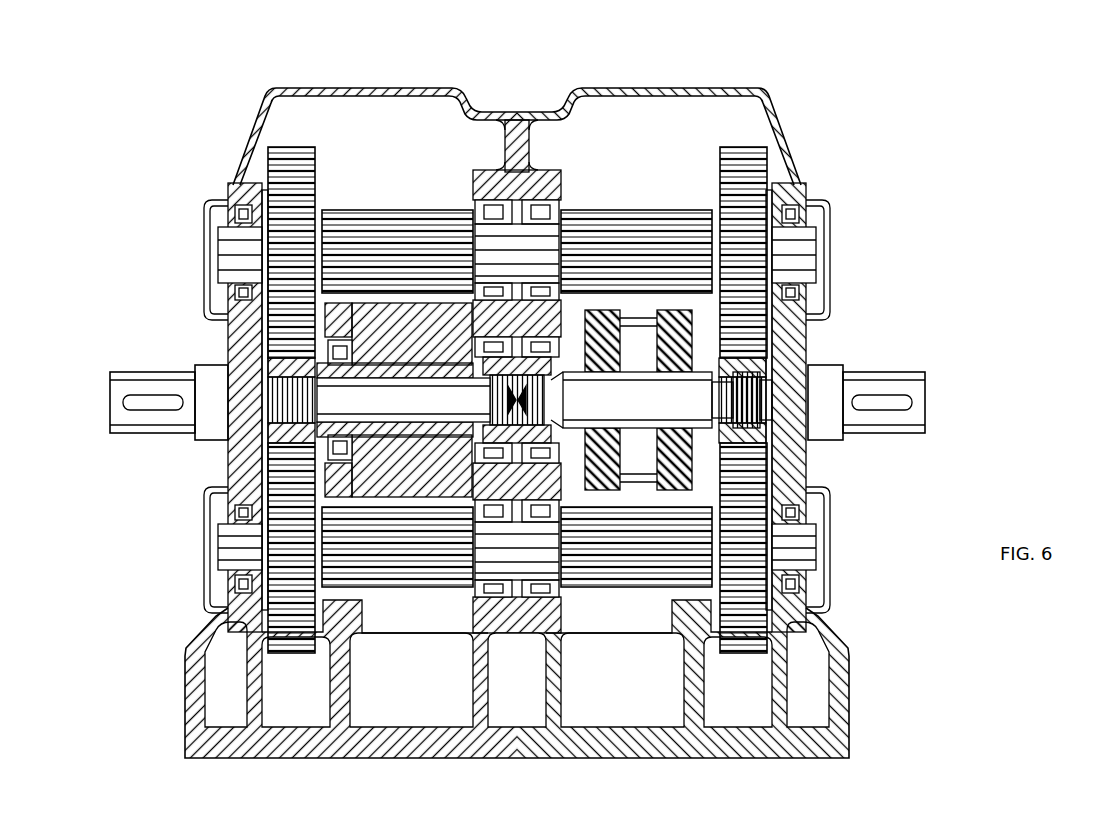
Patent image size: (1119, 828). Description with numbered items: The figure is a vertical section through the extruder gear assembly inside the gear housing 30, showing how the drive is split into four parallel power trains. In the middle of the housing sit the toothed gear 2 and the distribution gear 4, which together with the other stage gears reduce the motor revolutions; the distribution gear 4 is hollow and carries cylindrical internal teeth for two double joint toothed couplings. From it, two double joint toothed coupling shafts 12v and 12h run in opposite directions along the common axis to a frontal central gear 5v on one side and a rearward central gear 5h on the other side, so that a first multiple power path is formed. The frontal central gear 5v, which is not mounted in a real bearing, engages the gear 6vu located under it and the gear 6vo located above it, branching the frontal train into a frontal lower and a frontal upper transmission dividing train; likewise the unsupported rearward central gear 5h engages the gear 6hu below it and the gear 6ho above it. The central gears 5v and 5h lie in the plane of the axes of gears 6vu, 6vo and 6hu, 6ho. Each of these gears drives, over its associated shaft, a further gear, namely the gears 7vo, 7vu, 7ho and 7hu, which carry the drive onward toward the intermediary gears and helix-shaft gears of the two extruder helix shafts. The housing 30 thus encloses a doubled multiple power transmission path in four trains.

The gear housing 30 is at (475, 96).
The toothed gear 2 is at (641, 345).
The distribution gear 4 is at (417, 330).
The frontal central gear 5v is at (243, 362).
The rearward central gear 5h is at (760, 370).
The frontal upper gear 6vo is at (290, 190).
The frontal lower gear 6vu is at (297, 603).
The rearward upper gear 6ho is at (745, 170).
The rearward lower gear 6hu is at (740, 603).
The frontal upper gear 7vo is at (373, 227).
The frontal lower gear 7vu is at (407, 560).
The rearward upper gear 7ho is at (677, 227).
The rearward lower gear 7hu is at (640, 560).
The double joint toothed coupling shaft 12v is at (438, 397).
The double joint toothed coupling shaft 12h is at (642, 397).